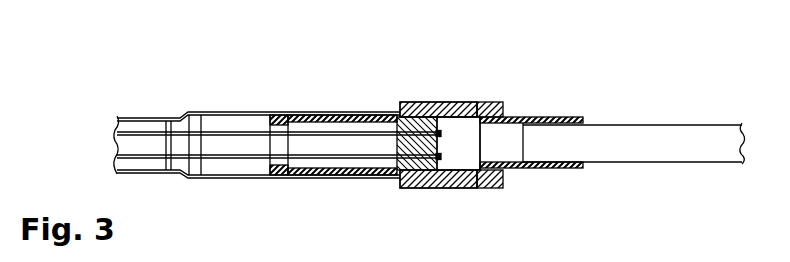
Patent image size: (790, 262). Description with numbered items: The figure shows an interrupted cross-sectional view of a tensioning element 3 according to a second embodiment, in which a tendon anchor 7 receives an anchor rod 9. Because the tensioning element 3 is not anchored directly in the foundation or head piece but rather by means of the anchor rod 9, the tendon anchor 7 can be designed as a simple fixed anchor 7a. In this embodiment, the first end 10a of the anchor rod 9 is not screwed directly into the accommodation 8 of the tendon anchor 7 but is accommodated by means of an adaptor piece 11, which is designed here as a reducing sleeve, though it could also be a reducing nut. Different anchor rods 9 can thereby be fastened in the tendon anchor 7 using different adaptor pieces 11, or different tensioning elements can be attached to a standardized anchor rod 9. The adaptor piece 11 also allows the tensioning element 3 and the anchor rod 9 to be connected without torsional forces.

The tensioning element 3 is at (267, 100).
The tendon anchor 7 is at (428, 105).
The fixed anchor 7a is at (455, 101).
The accommodation 8 is at (478, 105).
The anchor rod 9 is at (596, 138).
The first end 10a is at (547, 140).
The adaptor piece 11 is at (538, 117).